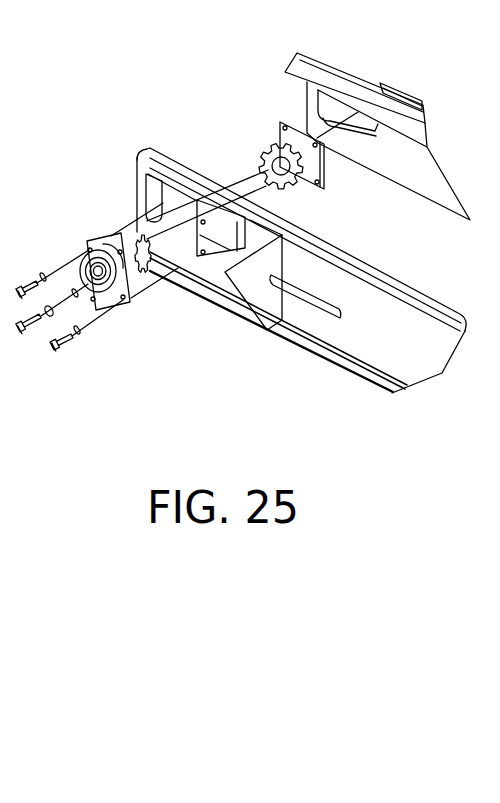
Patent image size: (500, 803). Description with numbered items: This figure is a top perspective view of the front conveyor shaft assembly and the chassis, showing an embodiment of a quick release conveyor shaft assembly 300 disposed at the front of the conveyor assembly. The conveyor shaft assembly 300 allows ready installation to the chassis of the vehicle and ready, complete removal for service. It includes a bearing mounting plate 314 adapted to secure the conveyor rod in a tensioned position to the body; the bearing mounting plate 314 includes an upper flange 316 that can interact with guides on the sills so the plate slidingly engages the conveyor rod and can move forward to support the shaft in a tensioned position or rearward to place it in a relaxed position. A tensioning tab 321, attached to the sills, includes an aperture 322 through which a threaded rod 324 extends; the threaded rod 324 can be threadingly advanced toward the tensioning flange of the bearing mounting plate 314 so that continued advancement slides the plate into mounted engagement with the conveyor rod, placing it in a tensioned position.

The quick release conveyor shaft assembly 300 is at (130, 343).
The bearing mounting plate 314 is at (138, 155).
The upper flange 316 is at (213, 207).
The tensioning tab 321 is at (245, 288).
The aperture 322 is at (267, 332).
The threaded rod 324 is at (341, 312).